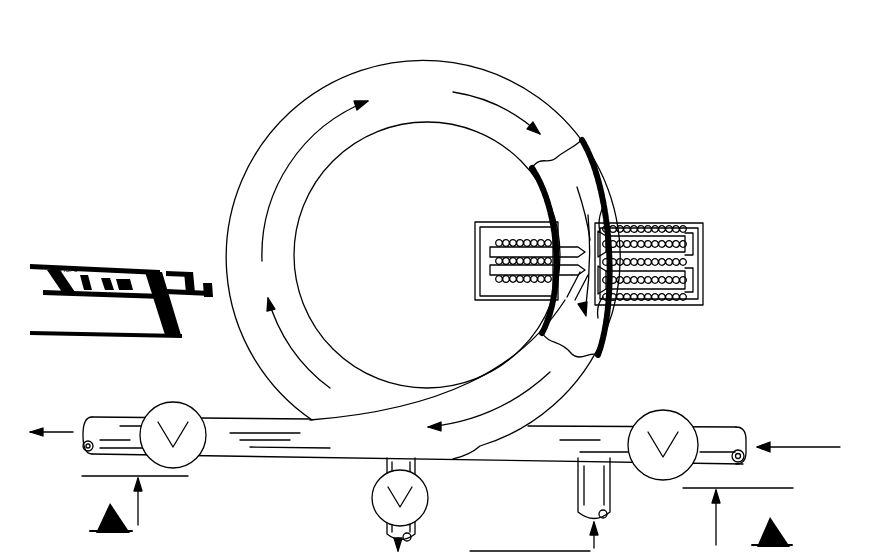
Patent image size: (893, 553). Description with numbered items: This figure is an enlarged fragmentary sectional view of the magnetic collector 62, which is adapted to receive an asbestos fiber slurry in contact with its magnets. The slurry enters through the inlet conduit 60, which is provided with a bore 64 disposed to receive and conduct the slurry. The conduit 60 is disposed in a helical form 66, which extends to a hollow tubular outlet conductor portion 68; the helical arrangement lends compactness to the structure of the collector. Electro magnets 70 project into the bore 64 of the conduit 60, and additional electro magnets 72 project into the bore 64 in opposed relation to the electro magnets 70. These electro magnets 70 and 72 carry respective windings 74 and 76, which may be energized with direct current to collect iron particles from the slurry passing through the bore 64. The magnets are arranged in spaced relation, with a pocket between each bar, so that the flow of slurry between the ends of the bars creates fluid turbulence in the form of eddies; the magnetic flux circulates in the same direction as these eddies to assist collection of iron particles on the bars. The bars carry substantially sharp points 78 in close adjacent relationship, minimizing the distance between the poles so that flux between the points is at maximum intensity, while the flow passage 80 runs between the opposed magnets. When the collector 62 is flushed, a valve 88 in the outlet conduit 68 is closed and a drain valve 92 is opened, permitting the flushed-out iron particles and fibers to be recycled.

The inlet conduit 60 is at (687, 436).
The magnetic collector 62 is at (577, 112).
The bore 64 is at (598, 183).
The helical form 66 is at (303, 128).
The hollow tubular outlet conductor portion 68 is at (108, 426).
The electro magnets 70 is at (618, 252).
The additional electro magnets 72 is at (556, 240).
The windings 74 is at (656, 287).
The windings 76 is at (520, 283).
The sharp points 78 is at (602, 238).
The flow passage 80 is at (574, 252).
The valve 88 is at (180, 410).
The drain valve 92 is at (372, 496).